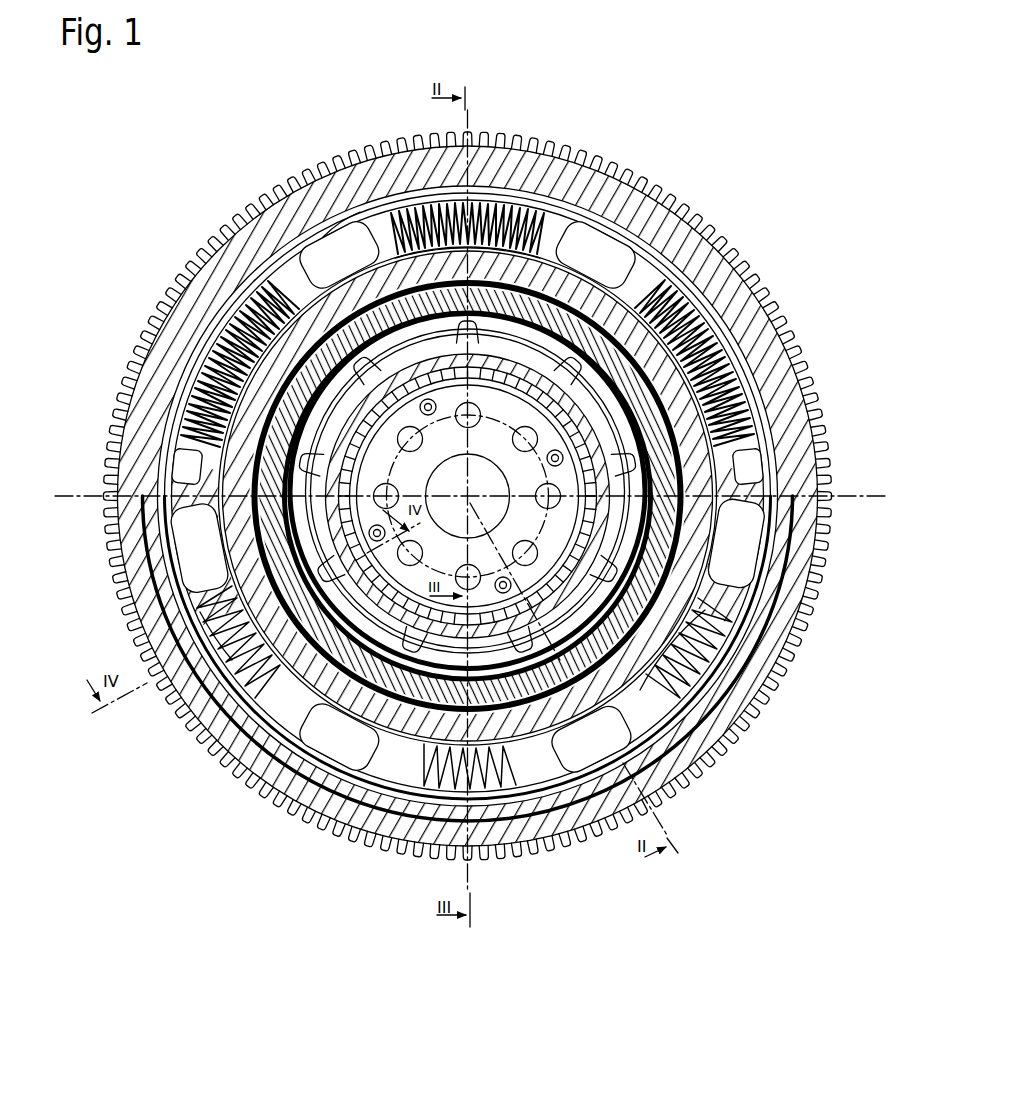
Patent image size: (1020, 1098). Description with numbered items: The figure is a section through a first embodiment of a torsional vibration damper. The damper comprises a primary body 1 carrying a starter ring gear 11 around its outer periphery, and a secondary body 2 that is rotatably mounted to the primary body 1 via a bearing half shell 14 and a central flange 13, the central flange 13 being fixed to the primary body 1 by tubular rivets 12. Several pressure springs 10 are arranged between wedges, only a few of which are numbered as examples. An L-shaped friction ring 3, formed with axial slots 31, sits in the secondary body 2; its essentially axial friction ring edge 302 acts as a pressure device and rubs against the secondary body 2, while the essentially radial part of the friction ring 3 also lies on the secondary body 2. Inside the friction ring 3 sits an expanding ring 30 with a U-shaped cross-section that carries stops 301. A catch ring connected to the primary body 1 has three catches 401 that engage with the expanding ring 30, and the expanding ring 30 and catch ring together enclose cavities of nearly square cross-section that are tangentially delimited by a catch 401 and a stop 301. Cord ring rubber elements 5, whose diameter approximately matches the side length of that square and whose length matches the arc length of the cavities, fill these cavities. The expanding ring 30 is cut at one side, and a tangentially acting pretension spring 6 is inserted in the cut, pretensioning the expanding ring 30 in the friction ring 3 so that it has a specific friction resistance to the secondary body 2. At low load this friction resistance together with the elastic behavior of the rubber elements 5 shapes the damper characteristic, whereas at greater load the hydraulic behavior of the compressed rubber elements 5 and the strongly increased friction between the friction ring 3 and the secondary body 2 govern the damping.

The primary body 1 is at (680, 247).
The secondary body 2 is at (723, 438).
The L-shaped friction ring 3 is at (323, 235).
The cord ring rubber elements 5 is at (647, 200).
The pretension spring 6 is at (485, 215).
The pressure springs 10 is at (333, 815).
The starter ring gear 11 is at (143, 340).
The tubular rivets 12 is at (371, 748).
The central flange 13 is at (150, 400).
The bearing half shell 14 is at (178, 453).
The expanding ring 30 is at (585, 800).
The axial slots 31 is at (690, 280).
The stops 301 is at (377, 213).
The friction ring edge 302 is at (193, 720).
The catches 401 is at (200, 340).